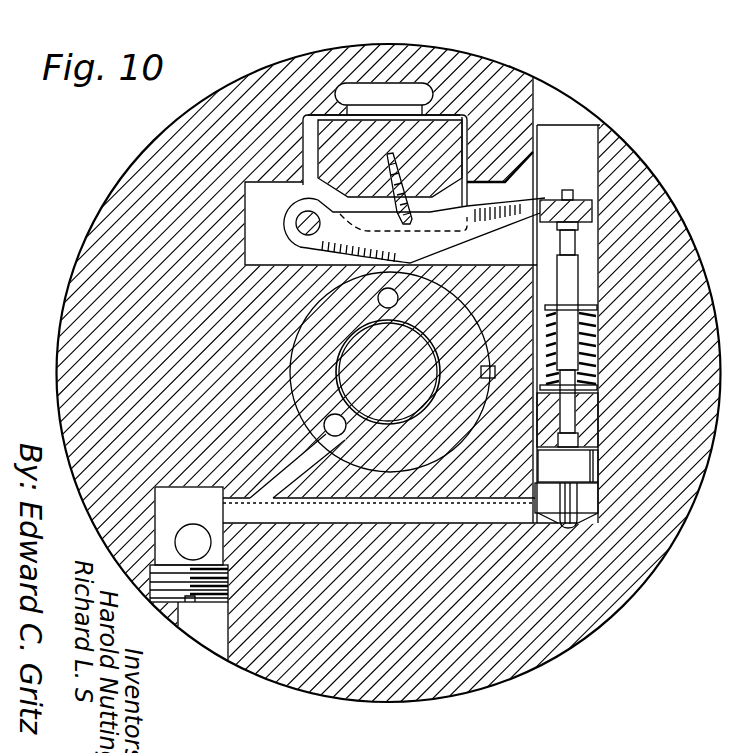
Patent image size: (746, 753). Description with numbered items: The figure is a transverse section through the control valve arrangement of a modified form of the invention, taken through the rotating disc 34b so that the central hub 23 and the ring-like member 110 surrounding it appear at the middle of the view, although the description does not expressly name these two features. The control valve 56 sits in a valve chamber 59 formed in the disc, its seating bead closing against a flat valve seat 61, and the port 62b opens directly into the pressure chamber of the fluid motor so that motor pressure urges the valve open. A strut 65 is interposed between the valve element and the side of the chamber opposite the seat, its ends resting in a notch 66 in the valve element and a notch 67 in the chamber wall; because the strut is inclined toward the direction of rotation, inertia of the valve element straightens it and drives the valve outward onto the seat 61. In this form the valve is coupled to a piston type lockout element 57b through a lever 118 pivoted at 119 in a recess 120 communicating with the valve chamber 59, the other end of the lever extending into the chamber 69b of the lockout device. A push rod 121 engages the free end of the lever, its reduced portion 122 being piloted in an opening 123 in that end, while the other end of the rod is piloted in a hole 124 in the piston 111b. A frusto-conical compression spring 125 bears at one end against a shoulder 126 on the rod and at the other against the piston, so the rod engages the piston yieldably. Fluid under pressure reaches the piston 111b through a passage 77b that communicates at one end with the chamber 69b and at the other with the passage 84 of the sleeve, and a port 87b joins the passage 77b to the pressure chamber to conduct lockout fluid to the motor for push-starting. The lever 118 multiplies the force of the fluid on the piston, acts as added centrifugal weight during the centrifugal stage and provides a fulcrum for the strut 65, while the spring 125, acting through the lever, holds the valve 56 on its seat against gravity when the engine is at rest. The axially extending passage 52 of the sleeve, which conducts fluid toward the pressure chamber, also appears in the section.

The casing body 34b is at (394, 690).
The notch 66 is at (320, 200).
The valve chamber 59 is at (311, 160).
The valve seat 61 is at (309, 113).
The port 62b is at (384, 98).
The control valve 56 is at (482, 116).
The pivot 119 is at (300, 234).
The notch 67 is at (404, 236).
The axially extending passage 52 is at (416, 263).
The recess 120 is at (506, 202).
The strut 65 is at (399, 207).
The lever 118 is at (490, 243).
The piston type lockout element 57b is at (608, 446).
The reduced portion 122 is at (572, 197).
The opening 123 is at (574, 194).
The chamber 69b is at (590, 247).
The push rod 121 is at (576, 272).
The frusto-conical compression spring 125 is at (597, 304).
The shoulder 126 is at (597, 333).
The hole 124 is at (572, 433).
The piston 111b is at (590, 470).
The ring 110 is at (302, 353).
The shaft hub 23 is at (388, 372).
The passage 84 is at (322, 428).
The passage 77b is at (400, 478).
The port 87b is at (189, 573).